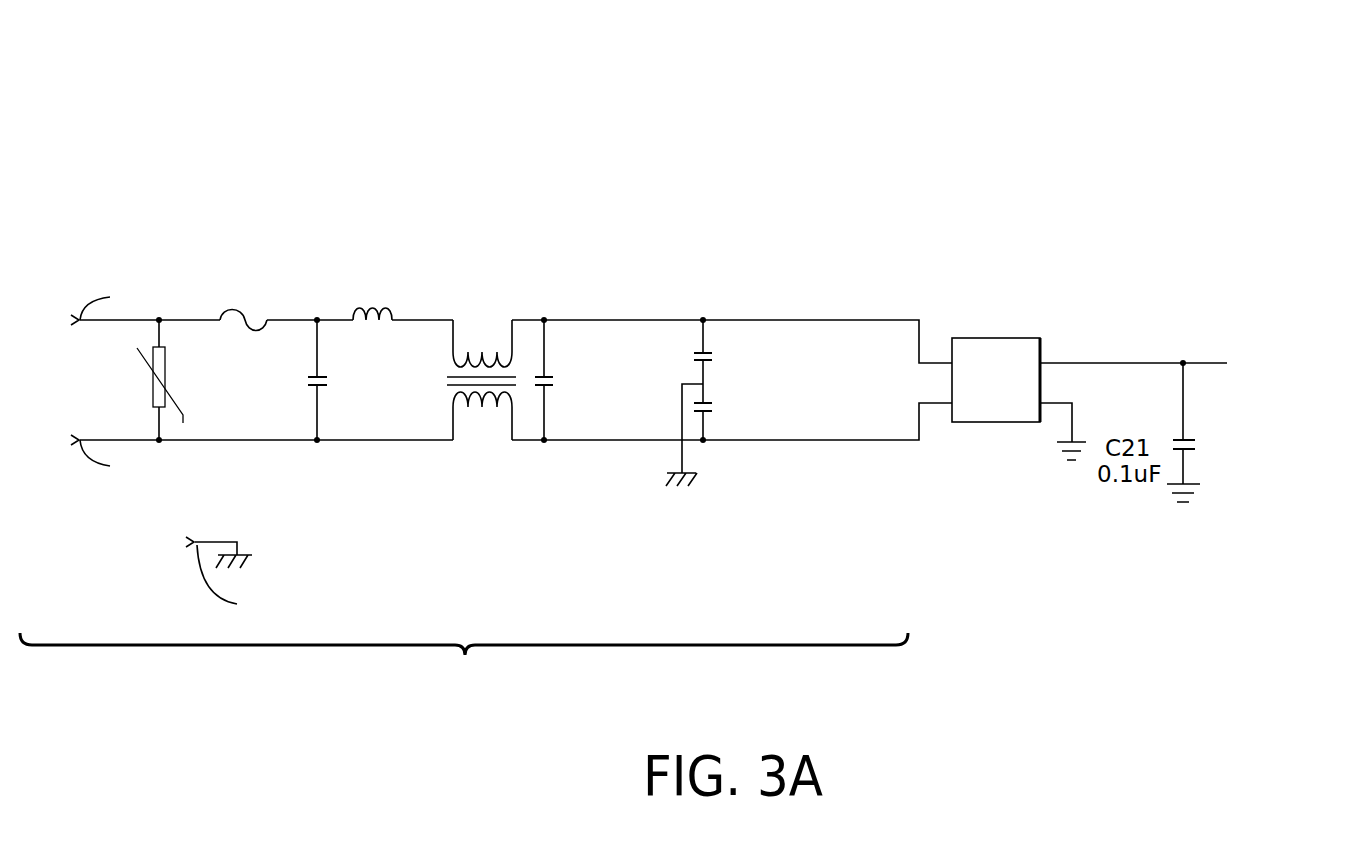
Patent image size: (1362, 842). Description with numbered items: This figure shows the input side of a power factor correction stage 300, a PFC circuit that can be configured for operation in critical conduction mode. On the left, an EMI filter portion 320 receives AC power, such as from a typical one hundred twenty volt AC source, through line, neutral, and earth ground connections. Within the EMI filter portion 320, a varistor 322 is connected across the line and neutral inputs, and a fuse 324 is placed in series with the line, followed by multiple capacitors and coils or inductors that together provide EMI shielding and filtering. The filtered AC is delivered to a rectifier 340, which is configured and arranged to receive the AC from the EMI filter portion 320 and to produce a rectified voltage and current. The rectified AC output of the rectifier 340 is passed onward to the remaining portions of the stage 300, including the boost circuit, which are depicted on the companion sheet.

The power factor correction stage 300 is at (260, 83).
The EMI filter portion 320 is at (464, 665).
The varistor 322 is at (166, 368).
The fuse 324 is at (257, 331).
The rectifier 340 is at (1022, 337).